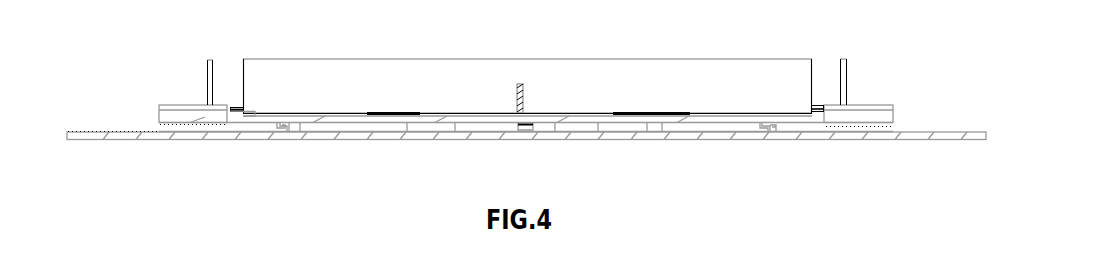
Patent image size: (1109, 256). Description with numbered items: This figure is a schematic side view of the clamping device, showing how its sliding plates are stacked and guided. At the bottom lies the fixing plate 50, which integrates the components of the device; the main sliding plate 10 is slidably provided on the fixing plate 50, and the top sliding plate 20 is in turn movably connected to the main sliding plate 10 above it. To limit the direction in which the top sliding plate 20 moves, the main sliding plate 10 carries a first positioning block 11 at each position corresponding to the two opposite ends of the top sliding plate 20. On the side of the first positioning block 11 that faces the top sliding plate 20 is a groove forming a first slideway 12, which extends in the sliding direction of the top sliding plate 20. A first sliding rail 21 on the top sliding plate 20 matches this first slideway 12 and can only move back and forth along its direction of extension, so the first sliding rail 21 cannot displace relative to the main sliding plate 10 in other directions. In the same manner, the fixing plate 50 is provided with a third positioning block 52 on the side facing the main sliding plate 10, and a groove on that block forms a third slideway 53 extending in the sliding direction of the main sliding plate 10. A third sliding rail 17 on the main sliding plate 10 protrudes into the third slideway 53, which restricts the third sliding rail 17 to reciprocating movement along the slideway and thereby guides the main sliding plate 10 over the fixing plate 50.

The main sliding plate 10 is at (696, 123).
The first positioning block 11 is at (228, 111).
The first slideway 12 is at (234, 112).
The third sliding rail 17 is at (778, 125).
The top sliding plate 20 is at (338, 59).
The first sliding rail 21 is at (242, 112).
The fixing plate 50 is at (874, 138).
The third positioning block 52 is at (762, 127).
The third slideway 53 is at (772, 132).